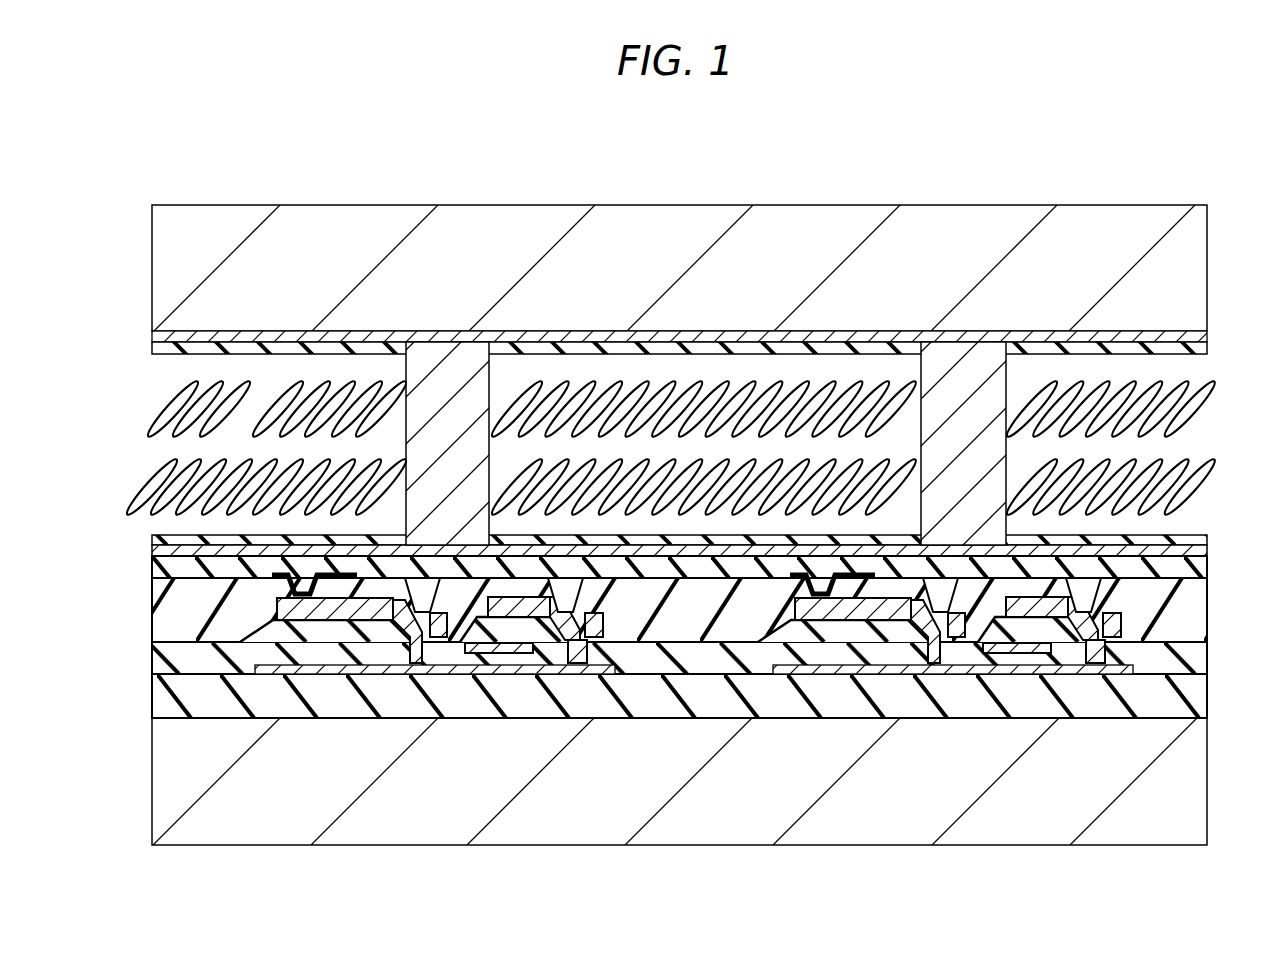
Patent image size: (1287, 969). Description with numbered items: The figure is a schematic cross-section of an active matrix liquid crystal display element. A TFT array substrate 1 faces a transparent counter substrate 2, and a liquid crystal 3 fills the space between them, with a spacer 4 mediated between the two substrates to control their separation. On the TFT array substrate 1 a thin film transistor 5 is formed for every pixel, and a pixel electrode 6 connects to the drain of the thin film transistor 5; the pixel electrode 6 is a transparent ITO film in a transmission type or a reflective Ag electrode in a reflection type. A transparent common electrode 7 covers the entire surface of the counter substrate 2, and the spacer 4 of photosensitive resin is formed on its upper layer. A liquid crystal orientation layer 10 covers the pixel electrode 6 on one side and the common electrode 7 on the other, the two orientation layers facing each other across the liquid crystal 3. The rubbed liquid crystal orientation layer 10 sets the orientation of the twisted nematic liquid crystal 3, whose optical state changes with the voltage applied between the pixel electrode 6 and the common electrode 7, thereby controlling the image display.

The TFT array substrate 1 is at (1205, 779).
The counter substrate 2 is at (818, 205).
The liquid crystal 3 is at (146, 454).
The spacer 4 is at (452, 365).
The thin film transistor 5 is at (1022, 698).
The pixel electrode 6 is at (686, 546).
The common electrode 7 is at (1205, 334).
The liquid crystal orientation layer 10 is at (1205, 346).